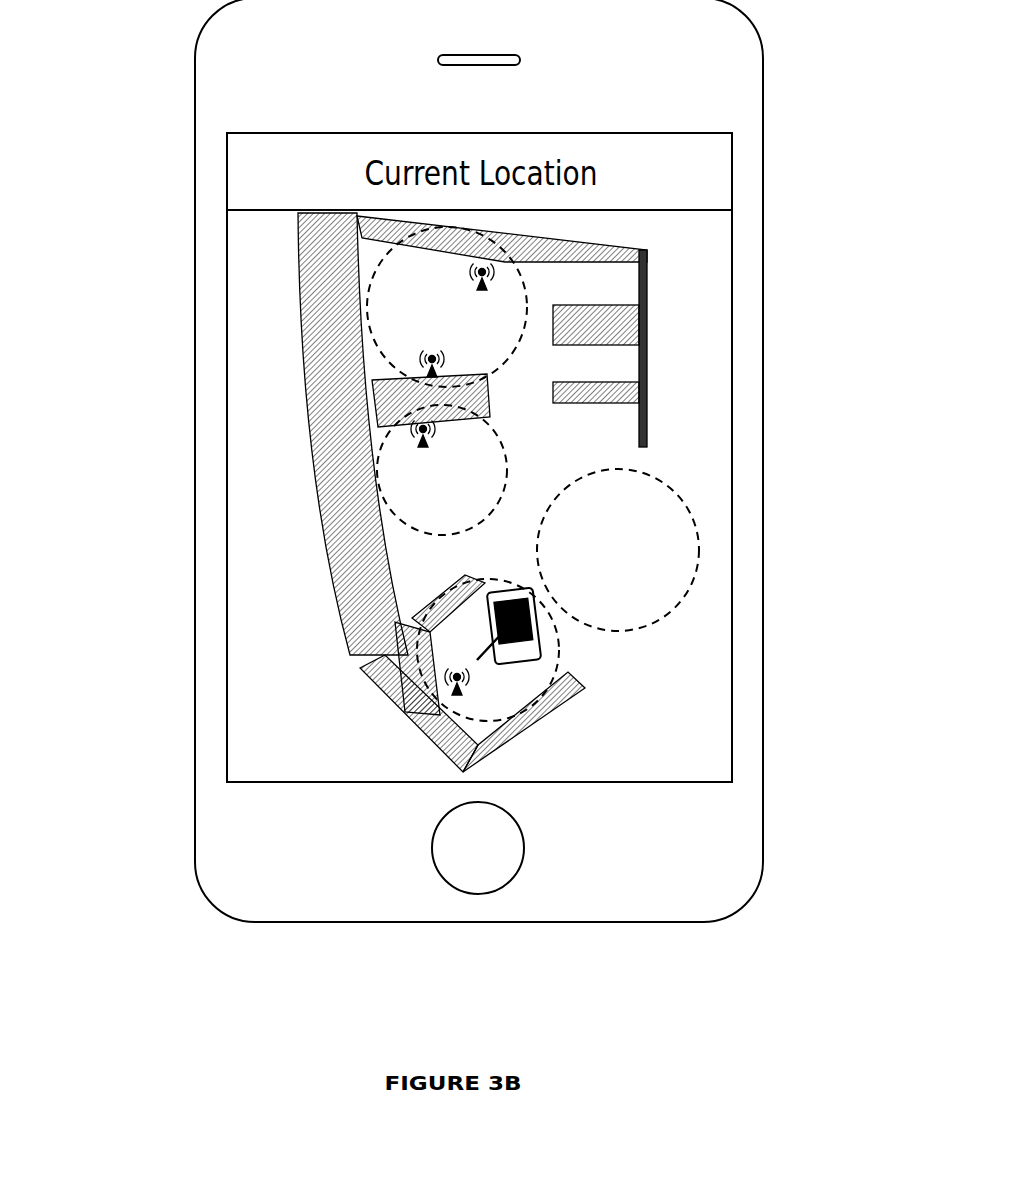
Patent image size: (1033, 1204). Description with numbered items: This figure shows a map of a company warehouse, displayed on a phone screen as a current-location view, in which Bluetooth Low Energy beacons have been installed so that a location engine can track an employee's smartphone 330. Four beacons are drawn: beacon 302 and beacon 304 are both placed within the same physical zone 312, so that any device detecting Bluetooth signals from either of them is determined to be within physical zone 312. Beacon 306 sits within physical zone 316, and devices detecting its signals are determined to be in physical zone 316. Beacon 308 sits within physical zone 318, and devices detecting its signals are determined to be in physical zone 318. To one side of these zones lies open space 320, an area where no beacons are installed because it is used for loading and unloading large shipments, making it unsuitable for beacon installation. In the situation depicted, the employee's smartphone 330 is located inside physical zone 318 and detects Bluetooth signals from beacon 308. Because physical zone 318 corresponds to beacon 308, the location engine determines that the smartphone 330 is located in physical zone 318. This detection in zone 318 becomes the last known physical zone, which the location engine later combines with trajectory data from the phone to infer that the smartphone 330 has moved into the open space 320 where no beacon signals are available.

The beacon 302 is at (440, 274).
The beacon 304 is at (395, 356).
The beacon 306 is at (388, 428).
The beacon 308 is at (422, 668).
The physical zone 312 is at (403, 315).
The physical zone 316 is at (400, 498).
The physical zone 318 is at (497, 706).
The open space 320 is at (628, 655).
The smartphone 330 is at (462, 624).